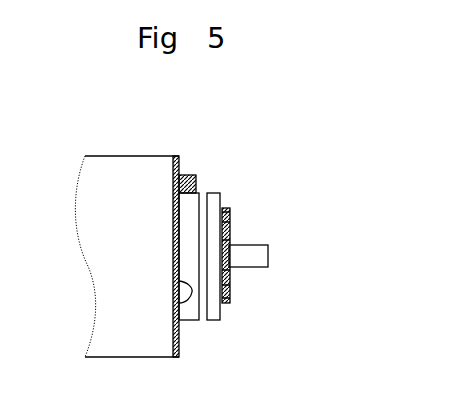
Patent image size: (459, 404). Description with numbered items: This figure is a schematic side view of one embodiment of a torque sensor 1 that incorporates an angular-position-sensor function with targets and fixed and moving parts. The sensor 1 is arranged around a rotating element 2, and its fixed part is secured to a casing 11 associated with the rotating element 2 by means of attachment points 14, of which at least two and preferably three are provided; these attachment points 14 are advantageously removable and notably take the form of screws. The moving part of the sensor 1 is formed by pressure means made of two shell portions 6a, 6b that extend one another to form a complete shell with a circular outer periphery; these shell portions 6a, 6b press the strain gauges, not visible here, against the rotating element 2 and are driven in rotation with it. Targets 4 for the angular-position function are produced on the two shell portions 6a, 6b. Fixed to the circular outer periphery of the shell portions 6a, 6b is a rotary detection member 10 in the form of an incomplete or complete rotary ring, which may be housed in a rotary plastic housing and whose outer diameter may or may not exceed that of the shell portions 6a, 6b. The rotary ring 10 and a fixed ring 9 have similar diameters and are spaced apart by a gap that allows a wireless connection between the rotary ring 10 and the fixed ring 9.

The sensor 1 is at (234, 235).
The rotating element 2 is at (250, 258).
The targets 4 is at (227, 215).
The shell portion 6a is at (228, 231).
The shell portion 6b is at (228, 278).
The fixed ring 9 is at (192, 225).
The rotary detection member 10 is at (230, 250).
The casing 11 is at (108, 180).
The attachment points 14 is at (181, 181).